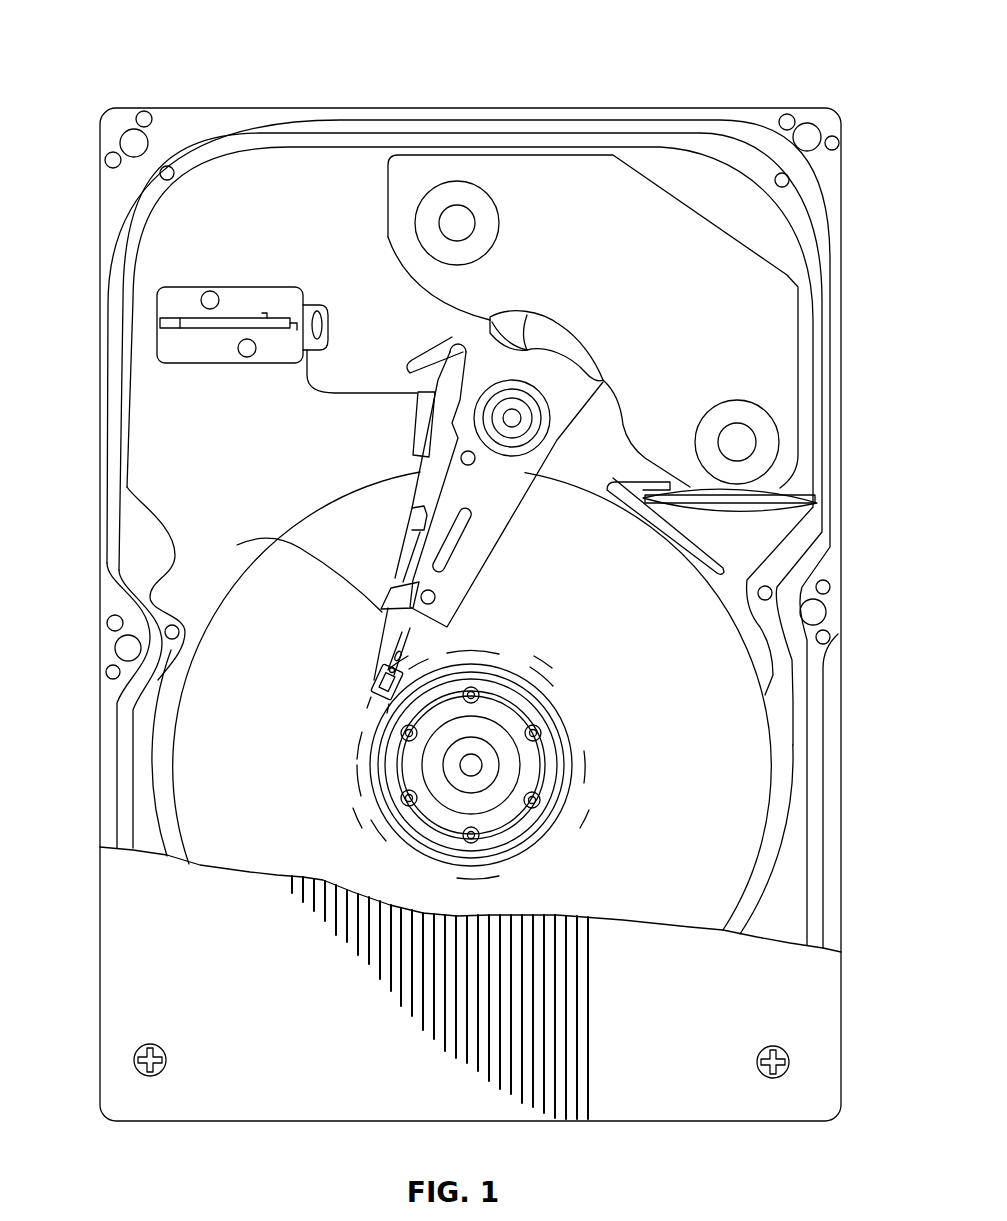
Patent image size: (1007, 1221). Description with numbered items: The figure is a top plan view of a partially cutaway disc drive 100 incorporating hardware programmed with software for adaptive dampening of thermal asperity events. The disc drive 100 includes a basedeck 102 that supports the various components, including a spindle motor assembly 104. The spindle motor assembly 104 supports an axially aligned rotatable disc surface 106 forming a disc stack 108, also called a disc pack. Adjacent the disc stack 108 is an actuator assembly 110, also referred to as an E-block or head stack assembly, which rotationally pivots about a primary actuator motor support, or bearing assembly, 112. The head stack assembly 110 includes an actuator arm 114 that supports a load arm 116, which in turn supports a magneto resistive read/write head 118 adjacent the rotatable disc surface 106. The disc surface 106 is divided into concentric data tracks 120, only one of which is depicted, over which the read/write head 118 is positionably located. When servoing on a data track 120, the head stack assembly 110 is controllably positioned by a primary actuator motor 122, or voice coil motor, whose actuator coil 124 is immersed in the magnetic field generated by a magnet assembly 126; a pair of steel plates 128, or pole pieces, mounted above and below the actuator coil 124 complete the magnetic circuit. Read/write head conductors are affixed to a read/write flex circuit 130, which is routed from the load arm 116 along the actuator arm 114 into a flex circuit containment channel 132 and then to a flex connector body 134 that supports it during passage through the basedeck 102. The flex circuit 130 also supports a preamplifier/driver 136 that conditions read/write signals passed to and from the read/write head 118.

The disc drive 100 is at (380, 94).
The basedeck 102 is at (303, 190).
The spindle motor assembly 104 is at (509, 723).
The rotatable disc surface 106 is at (670, 643).
The disc stack 108 is at (766, 779).
The actuator assembly 110 is at (499, 526).
The bearing assembly 112 is at (555, 412).
The actuator arm 114 is at (440, 587).
The load arm 116 is at (382, 652).
The read/write head 118 is at (372, 690).
The data track 120 is at (567, 833).
The primary actuator motor 122 is at (785, 280).
The actuator coil 124 is at (488, 323).
The magnet assembly 126 is at (546, 188).
The steel plates 128 is at (770, 362).
The read/write flex circuit 130 is at (307, 380).
The flex circuit containment channel 132 is at (413, 508).
The flex connector body 134 is at (170, 352).
The preamplifier/driver 136 is at (418, 416).